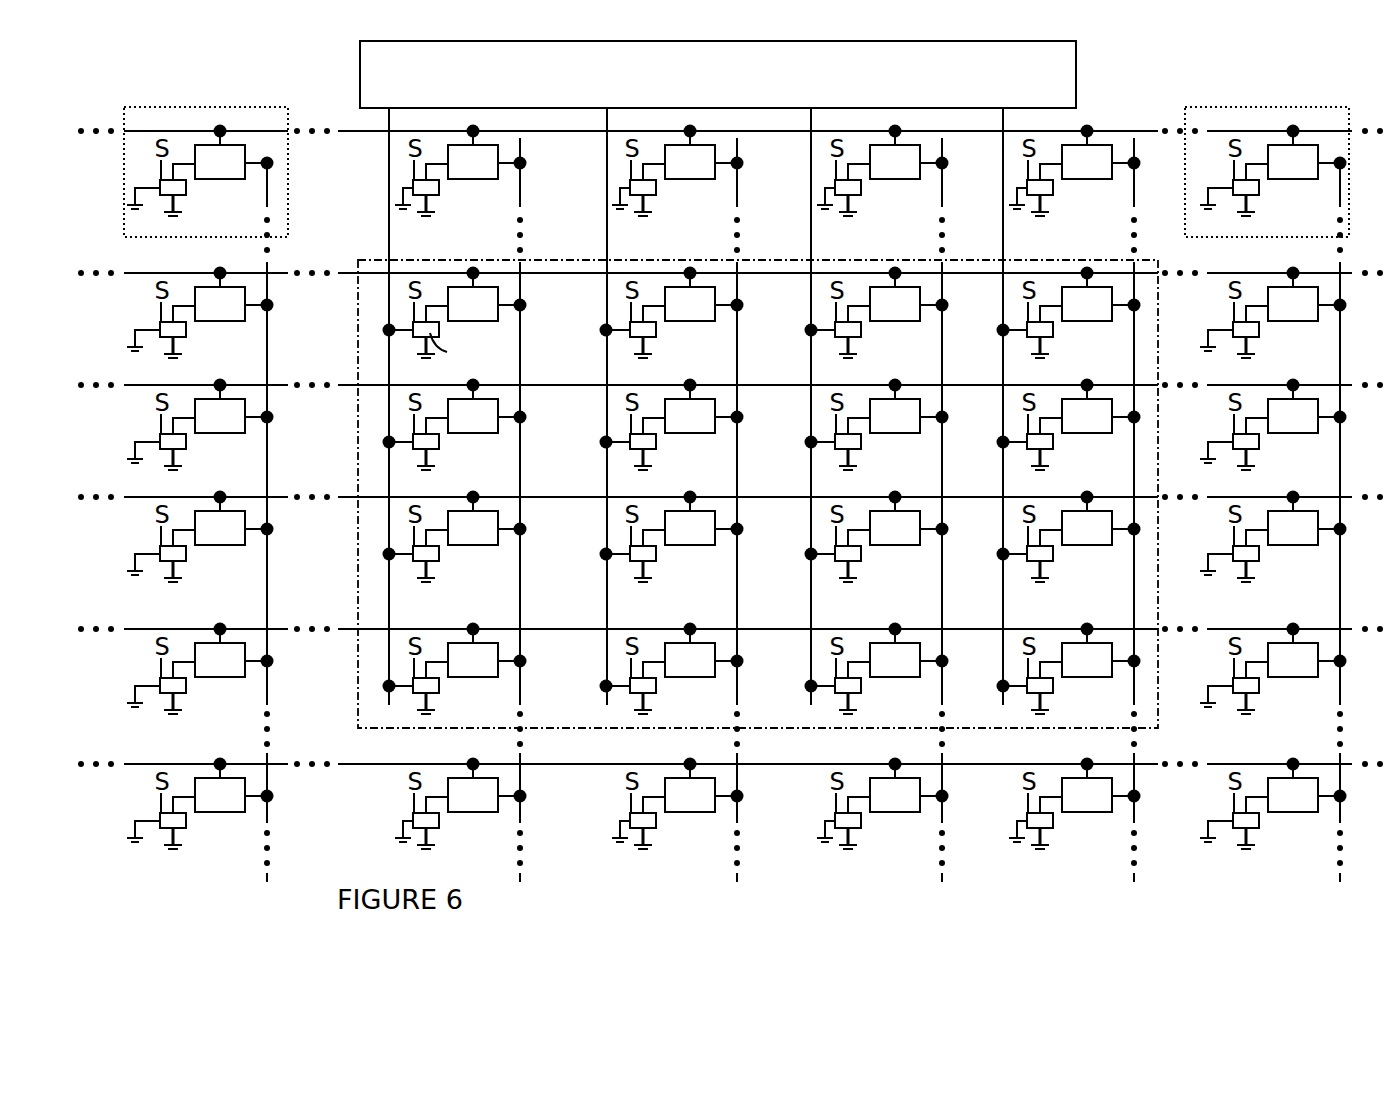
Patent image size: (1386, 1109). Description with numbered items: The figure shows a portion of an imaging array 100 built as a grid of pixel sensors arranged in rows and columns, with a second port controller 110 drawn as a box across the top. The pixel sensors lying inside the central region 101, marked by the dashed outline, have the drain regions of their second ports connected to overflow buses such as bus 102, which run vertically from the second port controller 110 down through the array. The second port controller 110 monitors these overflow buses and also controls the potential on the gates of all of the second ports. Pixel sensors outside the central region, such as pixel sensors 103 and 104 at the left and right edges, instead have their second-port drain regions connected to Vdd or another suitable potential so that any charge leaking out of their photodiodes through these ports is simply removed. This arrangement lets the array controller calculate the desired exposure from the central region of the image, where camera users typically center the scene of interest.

The imaging array 100 is at (112, 76).
The central region 101 is at (562, 259).
The overflow bus 102 is at (389, 234).
The pixel sensor 103 is at (193, 107).
The pixel sensor 104 is at (1230, 107).
The second port controller 110 is at (1068, 69).